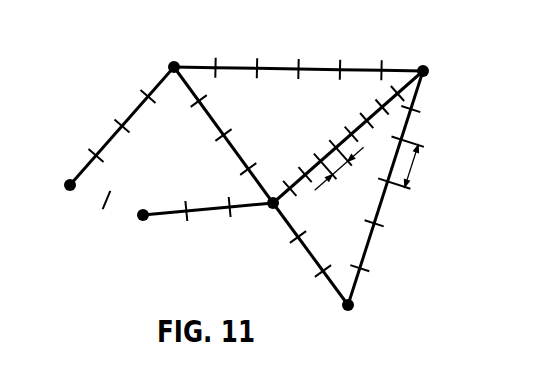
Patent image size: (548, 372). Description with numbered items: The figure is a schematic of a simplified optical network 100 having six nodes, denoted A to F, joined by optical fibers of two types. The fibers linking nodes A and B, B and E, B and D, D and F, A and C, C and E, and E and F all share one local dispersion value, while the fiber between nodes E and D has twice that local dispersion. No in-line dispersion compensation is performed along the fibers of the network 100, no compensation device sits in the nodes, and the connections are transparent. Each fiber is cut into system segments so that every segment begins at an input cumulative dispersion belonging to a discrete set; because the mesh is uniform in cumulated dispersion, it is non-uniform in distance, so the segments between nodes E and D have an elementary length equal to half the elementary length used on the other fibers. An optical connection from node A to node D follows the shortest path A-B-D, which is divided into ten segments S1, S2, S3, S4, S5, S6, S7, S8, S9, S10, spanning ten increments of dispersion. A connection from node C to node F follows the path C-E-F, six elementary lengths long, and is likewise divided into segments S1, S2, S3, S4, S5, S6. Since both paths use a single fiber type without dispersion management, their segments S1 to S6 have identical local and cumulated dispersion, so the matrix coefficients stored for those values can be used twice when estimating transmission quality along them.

The optical network 100 is at (104, 226).
The system segment S1 is at (82, 167).
The system segment S2 is at (105, 140).
The system segment S3 is at (131, 110).
The system segment S4 is at (160, 80).
The system segment S5 is at (190, 63).
The system segment S6 is at (231, 63).
The system segment S7 is at (277, 63).
The system segment S8 is at (324, 65).
The system segment S9 is at (365, 65).
The system segment S10 is at (412, 66).